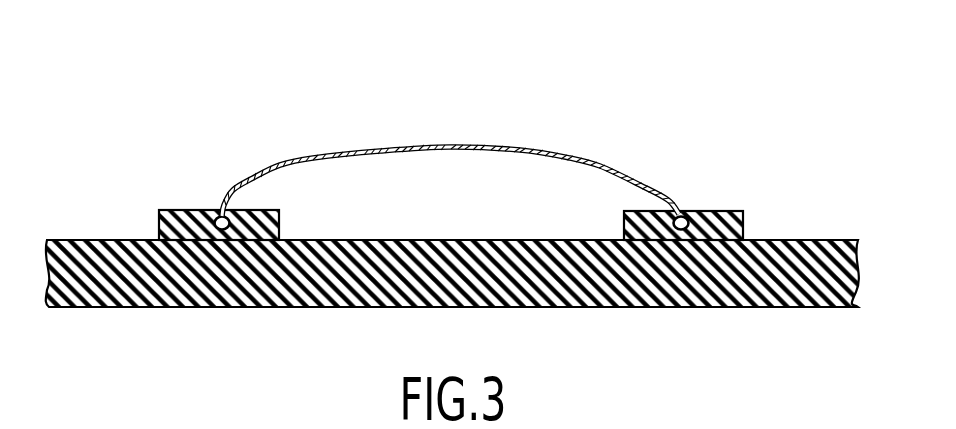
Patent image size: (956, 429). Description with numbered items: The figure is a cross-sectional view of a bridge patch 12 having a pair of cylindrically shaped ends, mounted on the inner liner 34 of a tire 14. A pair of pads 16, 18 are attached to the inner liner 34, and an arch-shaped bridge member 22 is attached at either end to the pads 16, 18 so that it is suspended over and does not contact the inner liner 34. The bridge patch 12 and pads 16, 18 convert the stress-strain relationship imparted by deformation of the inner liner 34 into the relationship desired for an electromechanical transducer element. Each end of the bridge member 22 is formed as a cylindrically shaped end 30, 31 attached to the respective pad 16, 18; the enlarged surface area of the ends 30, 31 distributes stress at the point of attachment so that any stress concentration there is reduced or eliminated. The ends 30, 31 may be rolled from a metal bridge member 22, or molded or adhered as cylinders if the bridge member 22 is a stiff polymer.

The bridge patch 12 is at (492, 111).
The tire 14 is at (786, 300).
The pad 16 is at (184, 210).
The pad 18 is at (716, 211).
The bridge member 22 is at (282, 163).
The cylindrically-shaped end 30 is at (212, 209).
The cylindrically-shaped end 31 is at (688, 213).
The inner liner 34 is at (802, 241).